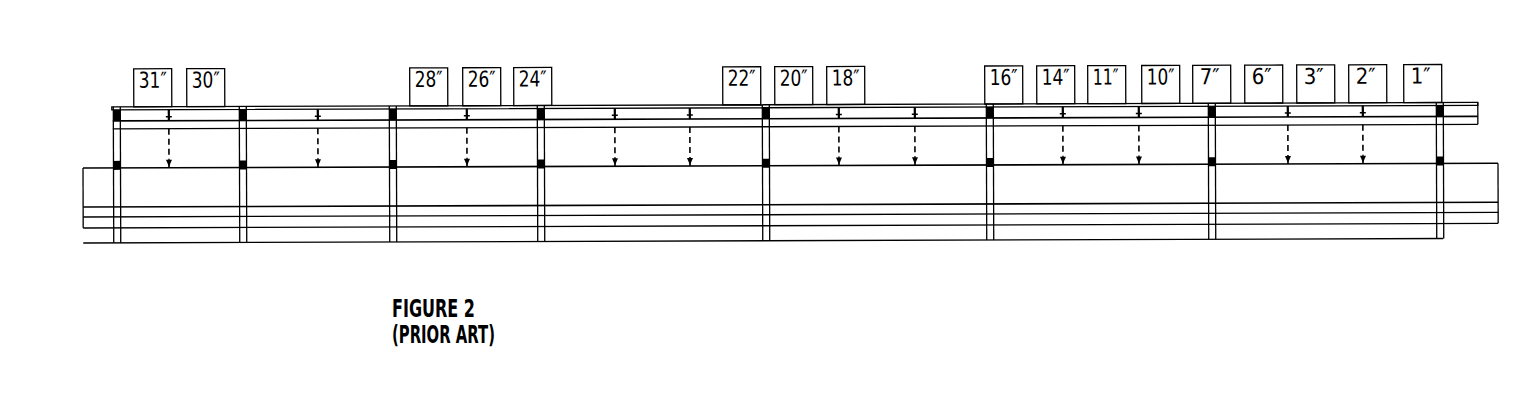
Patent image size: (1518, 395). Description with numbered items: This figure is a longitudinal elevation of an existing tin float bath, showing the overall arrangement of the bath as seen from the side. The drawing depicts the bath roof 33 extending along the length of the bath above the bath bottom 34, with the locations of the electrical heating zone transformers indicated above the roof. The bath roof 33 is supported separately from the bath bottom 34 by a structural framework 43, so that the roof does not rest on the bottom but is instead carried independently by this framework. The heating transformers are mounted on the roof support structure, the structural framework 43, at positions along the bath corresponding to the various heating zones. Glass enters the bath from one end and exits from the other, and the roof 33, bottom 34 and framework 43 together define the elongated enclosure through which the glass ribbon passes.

The bath roof 33 is at (790, 179).
The bath bottom 34 is at (790, 240).
The structural framework 43 is at (486, 129).